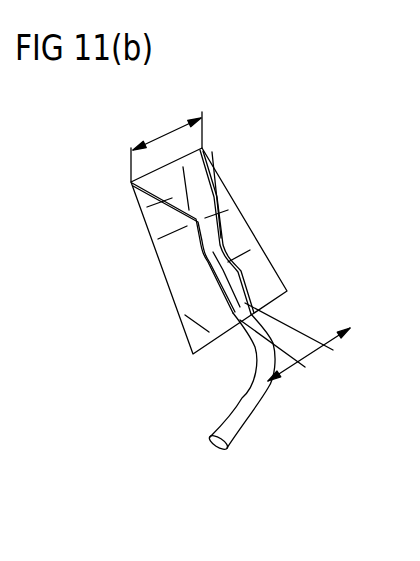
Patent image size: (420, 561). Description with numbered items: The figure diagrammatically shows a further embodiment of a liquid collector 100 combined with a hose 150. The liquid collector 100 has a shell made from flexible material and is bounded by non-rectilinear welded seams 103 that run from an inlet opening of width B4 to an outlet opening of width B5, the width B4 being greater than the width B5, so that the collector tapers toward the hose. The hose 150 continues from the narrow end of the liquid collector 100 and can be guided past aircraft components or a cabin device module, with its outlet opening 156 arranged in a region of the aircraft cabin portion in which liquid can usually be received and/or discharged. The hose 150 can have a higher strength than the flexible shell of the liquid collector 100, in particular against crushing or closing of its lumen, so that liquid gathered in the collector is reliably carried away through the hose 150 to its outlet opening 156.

The liquid collector 100 is at (247, 226).
The welded seams 103 is at (212, 166).
The hose 150 is at (237, 413).
The outlet opening 156 is at (217, 447).
The width of the inlet opening B4 is at (165, 134).
The width of the outlet opening B5 is at (324, 348).